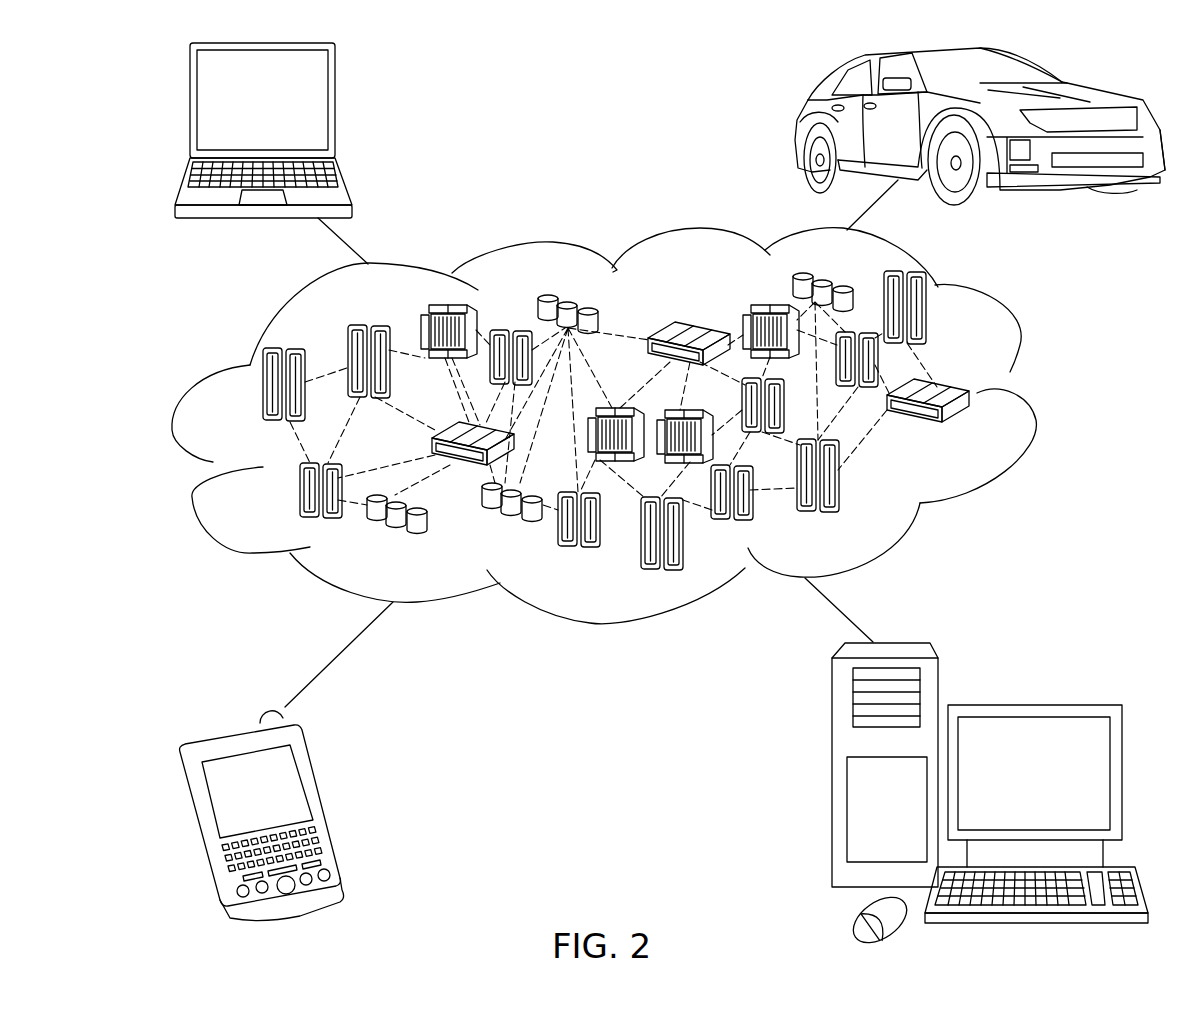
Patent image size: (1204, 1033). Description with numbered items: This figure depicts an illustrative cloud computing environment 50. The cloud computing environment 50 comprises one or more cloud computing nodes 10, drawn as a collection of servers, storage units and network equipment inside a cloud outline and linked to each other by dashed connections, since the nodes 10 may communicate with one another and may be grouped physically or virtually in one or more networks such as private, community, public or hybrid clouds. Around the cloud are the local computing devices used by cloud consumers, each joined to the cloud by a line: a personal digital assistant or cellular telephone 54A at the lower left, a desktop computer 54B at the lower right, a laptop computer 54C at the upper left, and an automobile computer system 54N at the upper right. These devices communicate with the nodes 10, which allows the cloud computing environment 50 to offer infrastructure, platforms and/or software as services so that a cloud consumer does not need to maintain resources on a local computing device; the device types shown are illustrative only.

The cloud computing nodes 10 is at (972, 432).
The cloud computing environment 50 is at (1032, 398).
The personal digital assistant (PDA) or cellular telephone 54A is at (327, 803).
The desktop computer 54B is at (1033, 705).
The laptop computer 54C is at (337, 108).
The automobile computer system 54N is at (800, 118).